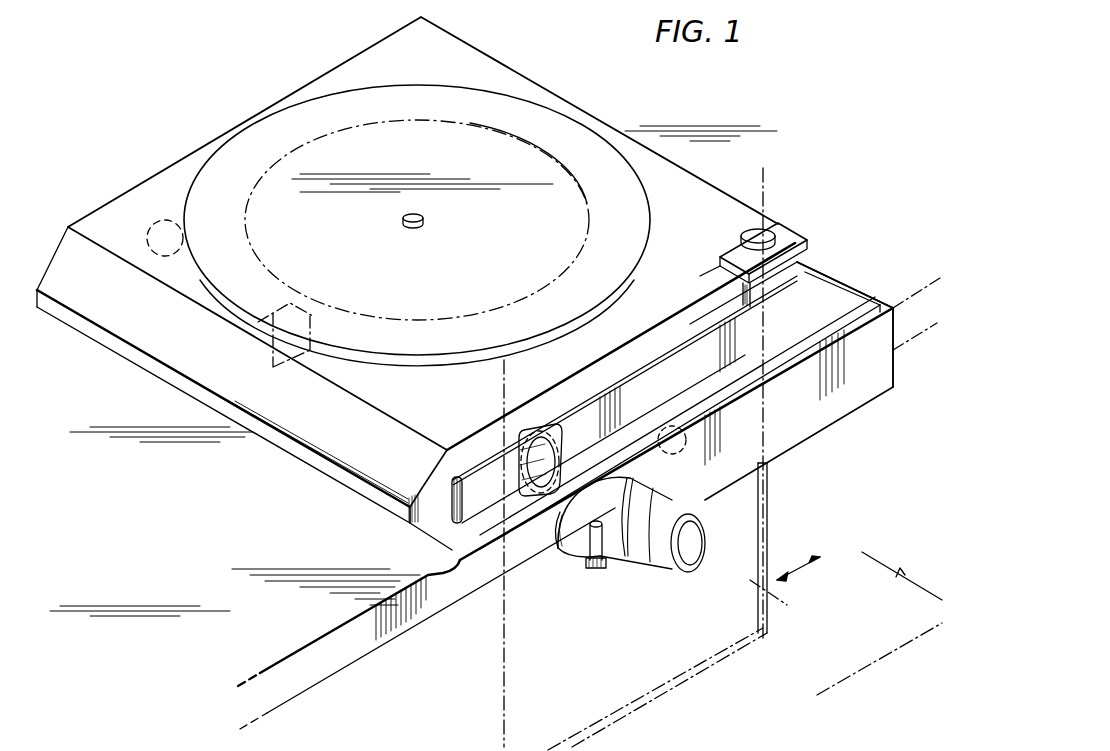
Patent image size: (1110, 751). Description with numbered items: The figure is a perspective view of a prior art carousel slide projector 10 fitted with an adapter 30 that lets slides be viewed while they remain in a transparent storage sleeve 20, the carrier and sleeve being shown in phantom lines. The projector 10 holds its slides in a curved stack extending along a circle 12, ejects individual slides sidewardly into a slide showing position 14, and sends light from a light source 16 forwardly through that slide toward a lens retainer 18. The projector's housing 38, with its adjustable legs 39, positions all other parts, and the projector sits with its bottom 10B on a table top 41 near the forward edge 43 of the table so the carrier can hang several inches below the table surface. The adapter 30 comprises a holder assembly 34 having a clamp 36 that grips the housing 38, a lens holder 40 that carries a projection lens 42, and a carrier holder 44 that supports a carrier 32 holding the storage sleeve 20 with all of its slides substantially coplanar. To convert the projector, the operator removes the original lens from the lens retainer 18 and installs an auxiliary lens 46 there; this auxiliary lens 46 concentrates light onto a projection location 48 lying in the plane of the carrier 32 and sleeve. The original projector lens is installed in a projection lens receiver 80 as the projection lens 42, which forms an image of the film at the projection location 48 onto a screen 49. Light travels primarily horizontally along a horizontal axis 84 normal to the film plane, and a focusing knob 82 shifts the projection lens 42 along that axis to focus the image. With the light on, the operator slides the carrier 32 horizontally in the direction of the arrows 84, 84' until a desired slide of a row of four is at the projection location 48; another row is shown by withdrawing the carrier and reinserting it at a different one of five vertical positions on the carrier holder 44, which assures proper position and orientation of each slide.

The slide projector 10 is at (600, 97).
The bottom of the slide projector 10B is at (428, 575).
The circle 12 is at (498, 128).
The slide showing position 14 is at (272, 355).
The light source 16 is at (155, 222).
The lens retainer 18 is at (533, 424).
The storage sleeve 20 is at (770, 532).
The adapter 30 is at (858, 277).
The carrier 32 is at (767, 636).
The holder assembly 34 is at (884, 300).
The clamp 36 is at (800, 238).
The housing 38 is at (722, 198).
The adjustable legs 39 is at (771, 465).
The lens holder 40 is at (854, 410).
The table top 41 is at (822, 183).
The projection lens 42 is at (679, 570).
The forward edge of the table 43 is at (403, 623).
The carrier holder 44 is at (457, 527).
The auxiliary lens 46 is at (533, 465).
The projection location 48 is at (556, 548).
The screen 49 is at (905, 600).
The projection lens receiver 80 is at (643, 565).
The focusing knob 82 is at (597, 570).
The horizontal axis 84 is at (810, 619).
The offset dimension 84' is at (817, 581).